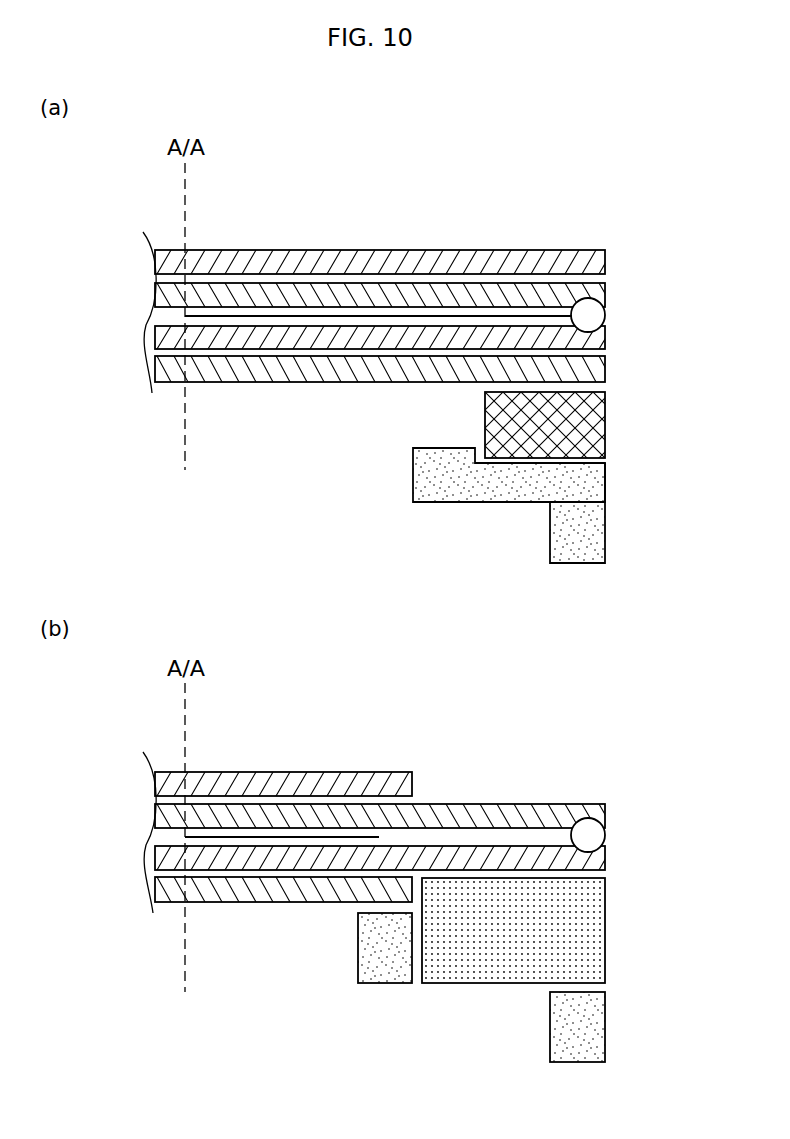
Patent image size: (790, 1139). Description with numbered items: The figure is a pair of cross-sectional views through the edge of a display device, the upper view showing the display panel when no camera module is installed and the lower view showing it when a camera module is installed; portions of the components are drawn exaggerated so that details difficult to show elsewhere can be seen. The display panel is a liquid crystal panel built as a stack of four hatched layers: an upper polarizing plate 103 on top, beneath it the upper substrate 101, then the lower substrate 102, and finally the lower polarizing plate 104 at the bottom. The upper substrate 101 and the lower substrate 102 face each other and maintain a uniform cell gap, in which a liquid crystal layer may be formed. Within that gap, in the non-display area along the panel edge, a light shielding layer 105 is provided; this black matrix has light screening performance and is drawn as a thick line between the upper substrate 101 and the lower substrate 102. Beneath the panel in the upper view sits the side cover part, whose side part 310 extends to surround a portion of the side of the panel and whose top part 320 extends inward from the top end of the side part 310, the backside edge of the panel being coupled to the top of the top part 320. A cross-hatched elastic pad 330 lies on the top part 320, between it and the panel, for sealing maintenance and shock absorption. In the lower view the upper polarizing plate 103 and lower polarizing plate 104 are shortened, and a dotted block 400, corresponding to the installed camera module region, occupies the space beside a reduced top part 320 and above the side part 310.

The upper substrate 101 is at (606, 296).
The lower substrate 102 is at (604, 338).
The upper polarizing plate 103 is at (606, 258).
The lower polarizing plate 104 is at (606, 368).
The light shielding layer 105 is at (438, 313).
The side part 310 is at (598, 540).
The top part 320 is at (525, 484).
The elastic pad 330 is at (598, 423).
The backlight unit 400 is at (600, 908).